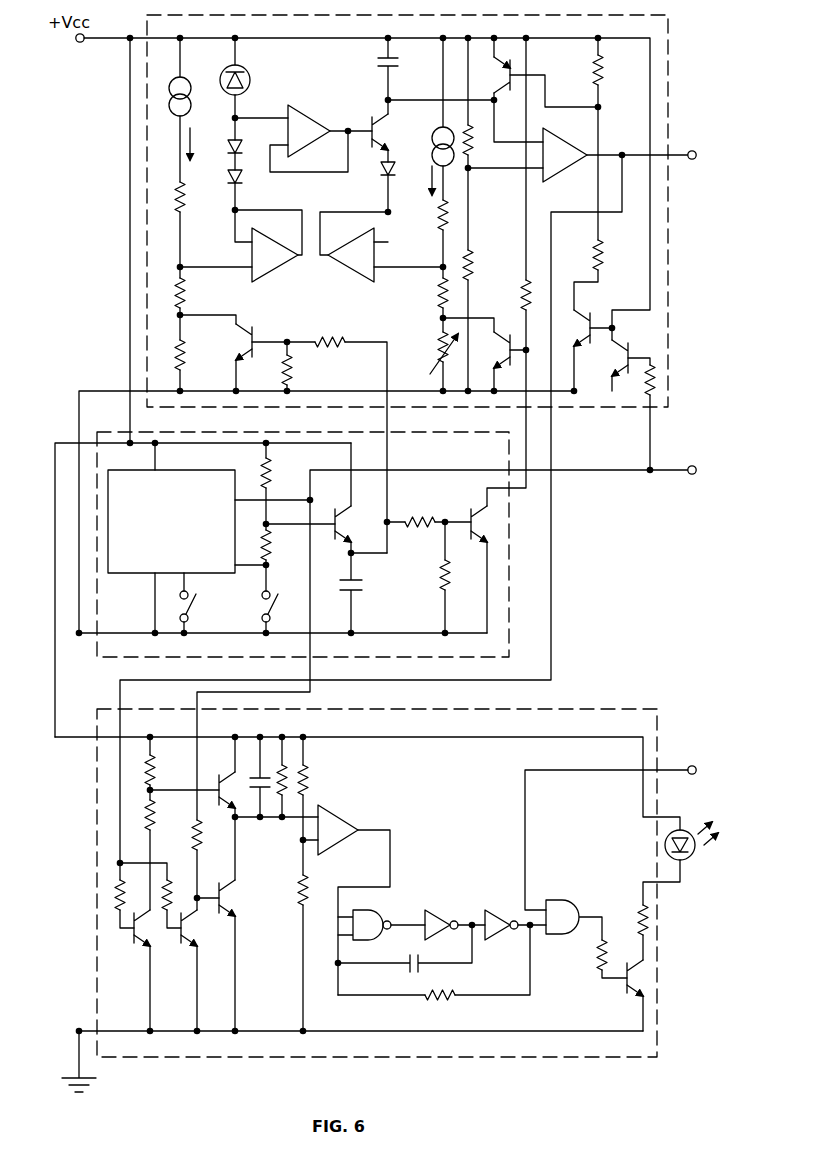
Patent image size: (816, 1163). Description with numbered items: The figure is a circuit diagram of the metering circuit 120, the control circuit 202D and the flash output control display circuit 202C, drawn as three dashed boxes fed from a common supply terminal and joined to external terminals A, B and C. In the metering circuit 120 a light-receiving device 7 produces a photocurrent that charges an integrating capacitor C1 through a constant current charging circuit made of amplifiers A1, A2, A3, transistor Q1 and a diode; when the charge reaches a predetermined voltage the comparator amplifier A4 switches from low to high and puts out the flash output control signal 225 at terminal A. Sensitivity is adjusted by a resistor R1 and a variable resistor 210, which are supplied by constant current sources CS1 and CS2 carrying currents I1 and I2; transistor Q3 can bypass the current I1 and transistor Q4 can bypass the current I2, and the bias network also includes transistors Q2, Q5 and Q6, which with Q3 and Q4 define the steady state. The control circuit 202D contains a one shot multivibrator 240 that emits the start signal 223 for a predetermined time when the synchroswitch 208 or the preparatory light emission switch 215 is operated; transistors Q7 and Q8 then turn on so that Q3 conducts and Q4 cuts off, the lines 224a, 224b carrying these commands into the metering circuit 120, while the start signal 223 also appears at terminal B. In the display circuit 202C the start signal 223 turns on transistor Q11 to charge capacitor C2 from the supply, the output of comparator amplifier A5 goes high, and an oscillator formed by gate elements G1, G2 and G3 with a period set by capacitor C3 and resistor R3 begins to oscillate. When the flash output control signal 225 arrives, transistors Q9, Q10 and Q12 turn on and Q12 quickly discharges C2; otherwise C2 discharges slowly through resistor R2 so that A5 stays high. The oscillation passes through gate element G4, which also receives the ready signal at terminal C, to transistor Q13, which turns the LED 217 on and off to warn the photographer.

The metering circuit 120 is at (147, 270).
The control circuit 202D is at (97, 433).
The flash output control display circuit 202C is at (97, 838).
The one shot multivibrator 240 is at (127, 574).
The synchroswitch 208 is at (196, 606).
The preparatory light emission switch 215 is at (280, 600).
The start signal 223 is at (288, 498).
The line 224a is at (390, 452).
The line 224b is at (528, 436).
The flash output control signal 225 is at (552, 547).
The variable resistor 210 is at (436, 349).
The LED 217 is at (683, 831).
The light-receiving device 7 is at (250, 80).
The constant current source CS1 is at (192, 83).
The constant current source CS2 is at (432, 140).
The current I1 is at (200, 145).
The current I2 is at (419, 186).
The resistor R1 is at (186, 366).
The resistor R2 is at (286, 770).
The resistor R3 is at (444, 997).
The integrating capacitor C1 is at (378, 62).
The capacitor C2 is at (256, 795).
The capacitor C3 is at (409, 972).
The amplifier A1 is at (308, 106).
The amplifier A2 is at (276, 276).
The amplifier A3 is at (357, 276).
The amplifier A4 is at (571, 177).
The amplifier A5 is at (341, 815).
The transistor Q1 is at (372, 120).
The transistor Q2 is at (505, 68).
The transistor Q3 is at (256, 334).
The transistor Q4 is at (507, 333).
The transistor Q5 is at (592, 320).
The transistor Q6 is at (620, 358).
The transistor Q7 is at (341, 522).
The transistor Q8 is at (476, 504).
The transistor Q9 is at (142, 948).
The transistor Q10 is at (184, 946).
The transistor Q11 is at (230, 898).
The transistor Q12 is at (215, 782).
The transistor Q13 is at (620, 988).
The gate element G1 is at (385, 910).
The gate element G2 is at (438, 909).
The gate element G3 is at (492, 909).
The gate element G4 is at (560, 900).
The terminal A is at (691, 143).
The terminal B is at (691, 458).
The terminal C is at (611, 826).